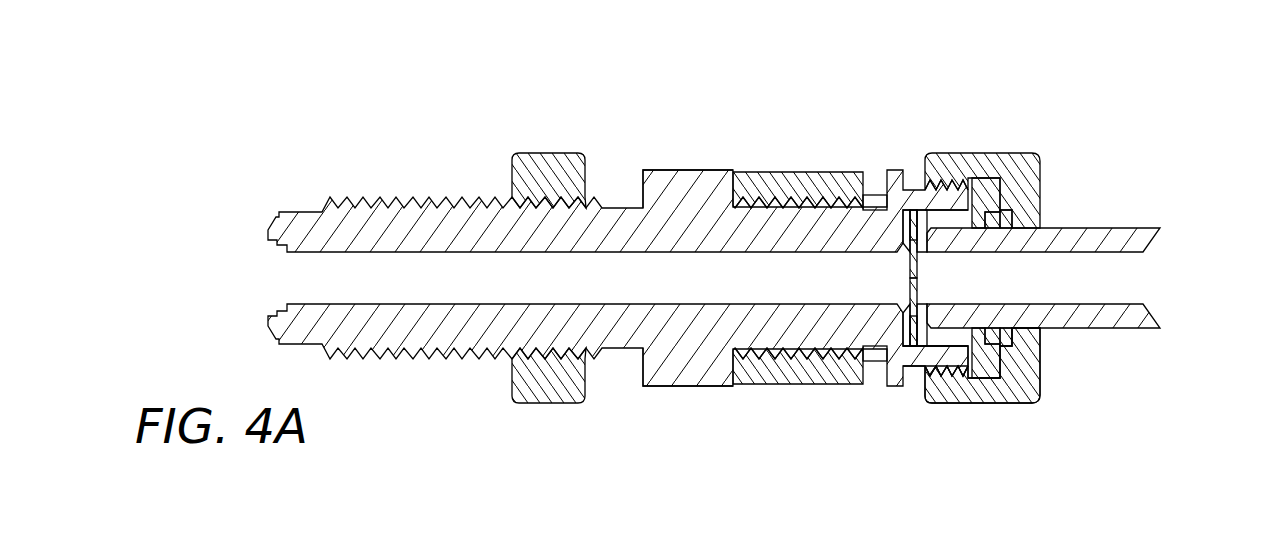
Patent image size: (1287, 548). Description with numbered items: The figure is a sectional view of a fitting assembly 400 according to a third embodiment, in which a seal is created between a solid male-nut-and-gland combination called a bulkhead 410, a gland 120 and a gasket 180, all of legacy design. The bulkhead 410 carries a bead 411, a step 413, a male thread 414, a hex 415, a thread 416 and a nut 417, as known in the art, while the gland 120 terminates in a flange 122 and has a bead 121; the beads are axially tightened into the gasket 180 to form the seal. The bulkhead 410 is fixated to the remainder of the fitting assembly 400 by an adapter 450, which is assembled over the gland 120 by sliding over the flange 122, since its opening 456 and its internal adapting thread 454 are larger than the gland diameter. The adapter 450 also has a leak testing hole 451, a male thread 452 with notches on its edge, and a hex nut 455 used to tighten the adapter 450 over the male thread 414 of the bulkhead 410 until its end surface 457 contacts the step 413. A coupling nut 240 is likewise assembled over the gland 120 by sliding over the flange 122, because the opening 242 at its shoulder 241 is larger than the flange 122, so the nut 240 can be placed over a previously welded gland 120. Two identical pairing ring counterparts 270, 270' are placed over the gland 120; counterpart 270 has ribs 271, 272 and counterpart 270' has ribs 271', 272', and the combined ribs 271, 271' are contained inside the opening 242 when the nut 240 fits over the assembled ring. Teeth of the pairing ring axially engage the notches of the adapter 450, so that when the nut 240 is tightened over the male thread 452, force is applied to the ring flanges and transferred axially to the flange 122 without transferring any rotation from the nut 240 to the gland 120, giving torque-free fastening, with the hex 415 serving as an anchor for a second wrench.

The fitting assembly 400 is at (502, 64).
The bulkhead 410 is at (320, 233).
The bead 411 is at (902, 323).
The step 413 is at (730, 192).
The male thread 414 is at (805, 355).
The hex 415 is at (675, 390).
The thread 416 is at (420, 198).
The nut 417 is at (535, 380).
The adapter 450 is at (805, 185).
The leak testing hole 451 is at (913, 193).
The male thread 452 is at (947, 367).
The internal adapting thread 454 is at (793, 200).
The hex nut 455 is at (753, 170).
The opening 456 is at (920, 207).
The end surface 457 is at (735, 368).
The gasket 180 is at (910, 337).
The gland 120 is at (1123, 240).
The bead 121 is at (973, 340).
The flange 122 is at (962, 207).
The coupling nut 240 is at (957, 163).
The shoulder 241 is at (920, 323).
The opening 242 is at (1040, 340).
The pairing ring counterpart 270 is at (1099, 325).
The pairing ring counterpart 270' is at (1020, 165).
The rib 271 is at (1061, 365).
The rib 271' is at (1073, 186).
The rib 272 is at (1053, 405).
The rib 272' is at (1061, 155).